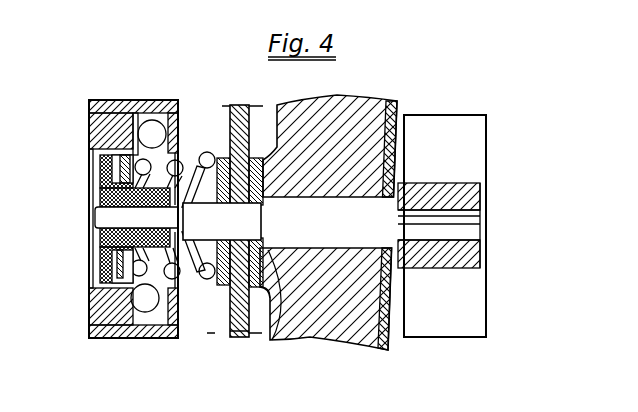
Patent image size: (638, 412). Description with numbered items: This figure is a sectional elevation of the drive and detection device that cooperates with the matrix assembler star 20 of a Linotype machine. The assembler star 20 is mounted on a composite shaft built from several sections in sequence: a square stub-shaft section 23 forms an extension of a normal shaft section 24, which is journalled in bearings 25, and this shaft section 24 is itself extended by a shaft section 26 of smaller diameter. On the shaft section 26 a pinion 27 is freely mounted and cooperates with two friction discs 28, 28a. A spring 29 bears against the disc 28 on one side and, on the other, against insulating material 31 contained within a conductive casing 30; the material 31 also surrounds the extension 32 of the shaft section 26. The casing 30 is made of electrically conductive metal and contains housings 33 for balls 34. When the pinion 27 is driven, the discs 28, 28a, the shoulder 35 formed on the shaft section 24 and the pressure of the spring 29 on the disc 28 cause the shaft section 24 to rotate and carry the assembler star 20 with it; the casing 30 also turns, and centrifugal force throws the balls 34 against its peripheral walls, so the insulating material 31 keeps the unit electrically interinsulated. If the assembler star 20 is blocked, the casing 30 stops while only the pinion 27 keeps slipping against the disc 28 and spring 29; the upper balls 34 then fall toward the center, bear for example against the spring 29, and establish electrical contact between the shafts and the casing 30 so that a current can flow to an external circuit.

The assembler star 20 is at (468, 297).
The square stub-shaft section 23 is at (462, 216).
The shaft section 24 is at (380, 232).
The bearings 25 is at (370, 104).
The shaft section of smaller diameter 26 is at (220, 222).
The pinion 27 is at (236, 104).
The friction disc 28 is at (224, 157).
The friction disc 28a is at (258, 157).
The spring 29 is at (204, 158).
The conductive casing 30 is at (117, 99).
The insulating material 31 is at (108, 195).
The extension of shaft 32 is at (96, 216).
The housings 33 is at (155, 99).
The balls 34 is at (144, 298).
The shoulder 35 is at (272, 340).